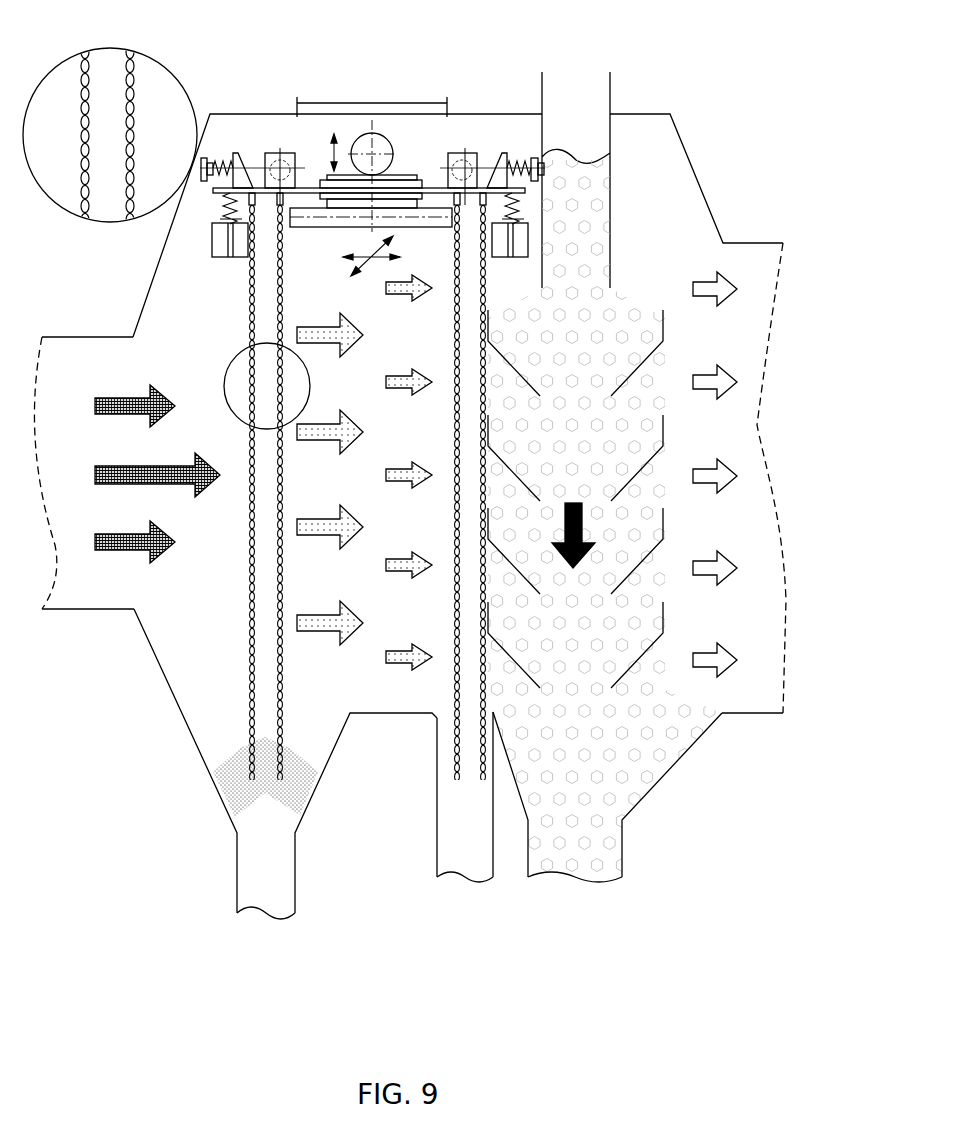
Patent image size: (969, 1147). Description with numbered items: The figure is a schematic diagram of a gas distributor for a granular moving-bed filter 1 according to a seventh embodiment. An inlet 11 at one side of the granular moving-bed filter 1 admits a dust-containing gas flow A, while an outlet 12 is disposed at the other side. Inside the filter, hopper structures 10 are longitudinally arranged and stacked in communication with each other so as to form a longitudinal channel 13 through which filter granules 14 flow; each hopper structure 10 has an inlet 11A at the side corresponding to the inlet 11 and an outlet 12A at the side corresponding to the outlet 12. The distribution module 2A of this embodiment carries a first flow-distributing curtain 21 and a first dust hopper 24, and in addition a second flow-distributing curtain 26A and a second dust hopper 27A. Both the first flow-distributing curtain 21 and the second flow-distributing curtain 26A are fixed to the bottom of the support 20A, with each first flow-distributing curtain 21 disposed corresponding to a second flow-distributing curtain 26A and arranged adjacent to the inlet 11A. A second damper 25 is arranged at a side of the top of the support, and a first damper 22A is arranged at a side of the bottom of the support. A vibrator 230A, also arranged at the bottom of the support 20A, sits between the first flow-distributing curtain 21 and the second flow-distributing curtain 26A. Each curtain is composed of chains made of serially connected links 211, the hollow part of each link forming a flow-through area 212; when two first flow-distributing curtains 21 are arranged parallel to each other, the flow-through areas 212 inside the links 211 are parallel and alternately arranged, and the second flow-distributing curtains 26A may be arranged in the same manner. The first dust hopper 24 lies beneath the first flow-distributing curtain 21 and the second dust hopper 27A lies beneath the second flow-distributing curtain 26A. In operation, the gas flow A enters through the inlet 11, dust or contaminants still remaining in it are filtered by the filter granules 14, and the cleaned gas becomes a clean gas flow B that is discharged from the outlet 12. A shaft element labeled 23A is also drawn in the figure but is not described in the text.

The granular moving-bed filter 1 is at (646, 63).
The distribution module 2A is at (245, 76).
The hopper structure 10 is at (612, 213).
The inlet 11 is at (66, 478).
The inlet 11A is at (538, 413).
The outlet 12 is at (741, 427).
The outlet 12A is at (638, 412).
The longitudinal channel 13 is at (588, 866).
The filter granules 14 is at (546, 880).
The support 20A is at (213, 192).
The first flow-distributing curtain 21 is at (455, 417).
The first damper 22A is at (212, 252).
The drive shaft 23A is at (394, 152).
The first dust hopper 24 is at (437, 835).
The second damper 25 is at (222, 164).
The second flow-distributing curtain 26A is at (250, 308).
The second dust hopper 27A is at (237, 876).
The link 211 is at (80, 208).
The flow-through area 212 is at (106, 109).
The vibrator 230A is at (312, 228).
The gas flow A is at (92, 404).
The clean gas flow B is at (702, 388).